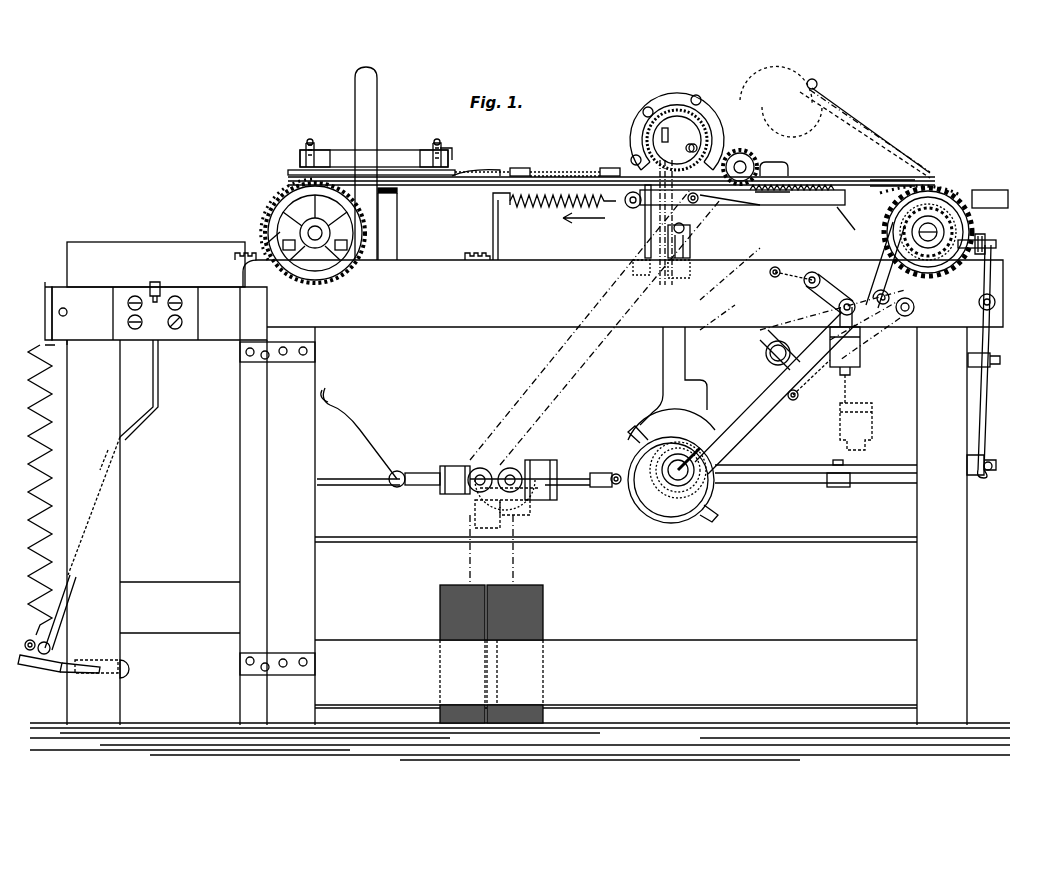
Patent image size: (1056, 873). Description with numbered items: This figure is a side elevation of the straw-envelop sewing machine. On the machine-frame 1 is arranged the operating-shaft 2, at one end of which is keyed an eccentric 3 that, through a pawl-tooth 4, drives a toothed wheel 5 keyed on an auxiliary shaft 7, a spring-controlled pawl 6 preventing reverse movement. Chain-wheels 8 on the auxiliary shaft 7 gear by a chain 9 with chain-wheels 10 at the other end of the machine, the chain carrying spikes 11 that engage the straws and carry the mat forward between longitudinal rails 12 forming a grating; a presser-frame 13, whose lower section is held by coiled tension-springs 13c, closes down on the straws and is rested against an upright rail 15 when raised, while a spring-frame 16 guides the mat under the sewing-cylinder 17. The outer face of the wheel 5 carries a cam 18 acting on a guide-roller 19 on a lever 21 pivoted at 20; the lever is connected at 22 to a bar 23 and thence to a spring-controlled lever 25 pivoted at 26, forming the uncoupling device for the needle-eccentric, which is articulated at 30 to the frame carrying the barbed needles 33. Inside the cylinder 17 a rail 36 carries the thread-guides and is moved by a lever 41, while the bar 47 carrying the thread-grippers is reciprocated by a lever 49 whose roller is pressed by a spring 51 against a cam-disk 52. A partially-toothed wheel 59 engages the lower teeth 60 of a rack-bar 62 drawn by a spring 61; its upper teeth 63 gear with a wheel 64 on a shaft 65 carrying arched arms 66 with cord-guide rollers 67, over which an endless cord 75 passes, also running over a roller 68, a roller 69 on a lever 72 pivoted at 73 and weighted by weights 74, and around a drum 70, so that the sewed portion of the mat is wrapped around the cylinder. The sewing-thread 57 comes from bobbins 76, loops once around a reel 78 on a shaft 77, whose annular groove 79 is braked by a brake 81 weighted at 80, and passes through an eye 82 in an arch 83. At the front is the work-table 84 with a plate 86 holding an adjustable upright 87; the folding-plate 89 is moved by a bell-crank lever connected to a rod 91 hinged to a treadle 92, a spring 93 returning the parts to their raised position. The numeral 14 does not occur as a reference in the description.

The machine-frame 1 is at (492, 320).
The operating-shaft 2 is at (702, 455).
The eccentric 3 is at (655, 510).
The pawl-tooth 4 is at (846, 256).
The toothed wheel 5 is at (945, 262).
The spring-controlled pawl 6 is at (876, 262).
The auxiliary shaft 7 is at (918, 232).
The chain-wheel 8 is at (860, 210).
The chain 9 is at (275, 198).
The chain-wheel 10 is at (360, 218).
The spikes 11 is at (262, 232).
The rails 12 is at (440, 186).
The presser-frame 13 is at (300, 160).
The coiled tension-spring 13c is at (455, 150).
The plate 14 is at (374, 157).
The upright rail 15 is at (375, 100).
The spring-frame 16 is at (565, 170).
The sewing-cylinder 17 is at (650, 120).
The semicircular projection or cam 18 is at (525, 168).
The guide-roller 19 is at (992, 248).
The pivot 20 is at (996, 364).
The lever 21 is at (987, 408).
The connection 22 is at (992, 460).
The bar 23 is at (988, 472).
The spring-controlled lever 25 is at (770, 465).
The pivot point 26 is at (828, 470).
The articulation 30 is at (685, 250).
The barbed needles 33 is at (648, 225).
The rail 36 is at (660, 134).
The lever 41 is at (660, 348).
The bar 47 is at (700, 148).
The lever 49 is at (772, 160).
The spring 51 is at (660, 147).
The cam-disk 52 is at (690, 225).
The sewing-thread 57 is at (540, 395).
The partially-toothed wheel 59 is at (945, 245).
The lower series of teeth 60 is at (1008, 200).
The spring 61 is at (548, 205).
The rack-bar 62 is at (782, 200).
The upper series of teeth 63 is at (830, 196).
The toothed wheel 64 is at (723, 200).
The shaft 65 is at (755, 202).
The arched arms 66 is at (677, 93).
The cord-guide rollers 67 is at (646, 108).
The roller 68 is at (742, 199).
The roller 69 is at (792, 400).
The drum 70 is at (926, 233).
The lever 72 is at (806, 286).
The pivot 73 is at (995, 302).
The weights 74 is at (830, 357).
The endless cord or rope 75 is at (895, 125).
The bobbins 76 is at (440, 612).
The shaft 77 is at (565, 478).
The reel 78 is at (455, 465).
The annular groove 79 is at (480, 468).
The weight 80 is at (474, 523).
The brake 81 is at (370, 450).
The eye 82 is at (530, 512).
The arch 83 is at (535, 505).
The work-table 84 is at (100, 300).
The plate 86 is at (180, 288).
The adjustable upright or block 87 is at (175, 242).
The horizontally-movable plate 89 is at (58, 280).
The rod 91 is at (158, 394).
The treadle 92 is at (48, 668).
The spring 93 is at (60, 540).